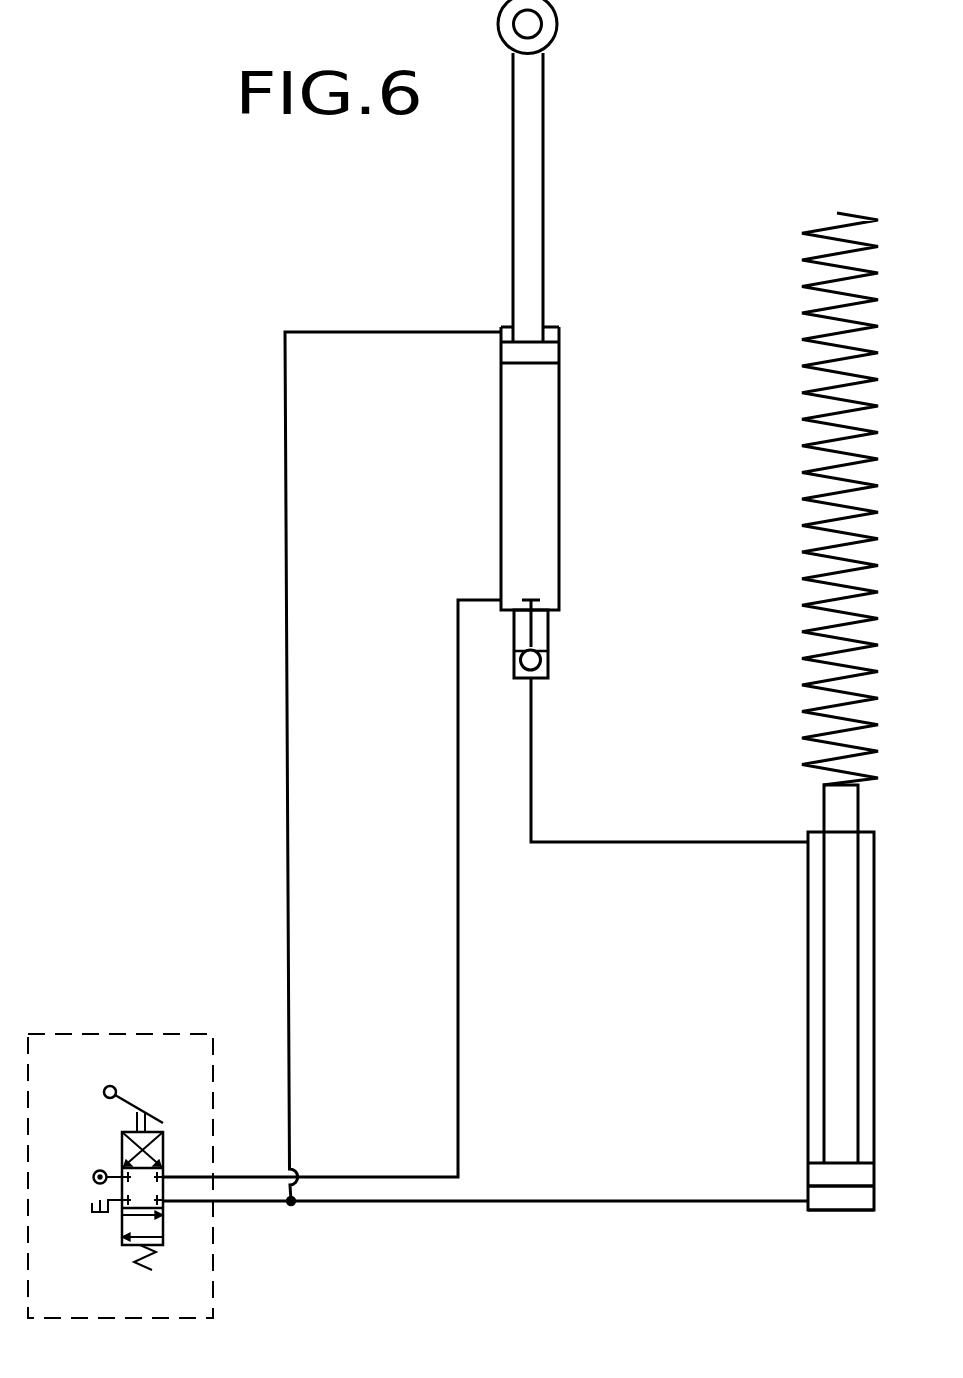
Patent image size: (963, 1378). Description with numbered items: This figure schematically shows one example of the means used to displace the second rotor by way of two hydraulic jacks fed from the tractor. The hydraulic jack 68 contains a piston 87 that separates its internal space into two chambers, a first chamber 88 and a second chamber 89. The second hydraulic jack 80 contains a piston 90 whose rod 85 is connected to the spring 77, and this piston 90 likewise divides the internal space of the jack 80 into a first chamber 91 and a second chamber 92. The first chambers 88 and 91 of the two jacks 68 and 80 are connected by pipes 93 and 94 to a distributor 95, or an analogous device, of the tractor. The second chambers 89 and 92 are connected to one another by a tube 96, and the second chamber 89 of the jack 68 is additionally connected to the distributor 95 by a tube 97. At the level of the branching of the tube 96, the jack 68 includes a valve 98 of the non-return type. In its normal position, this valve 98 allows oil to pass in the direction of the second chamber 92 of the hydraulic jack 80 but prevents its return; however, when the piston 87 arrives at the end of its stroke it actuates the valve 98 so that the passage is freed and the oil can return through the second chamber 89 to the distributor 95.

The hydraulic jack 68 is at (560, 477).
The spring 77 is at (807, 660).
The hydraulic jack 80 is at (807, 1042).
The rod 85 is at (840, 880).
The piston 87 is at (548, 357).
The first chamber 88 is at (558, 325).
The second chamber 89 is at (538, 503).
The piston 90 is at (825, 1175).
The first chamber 91 is at (825, 1202).
The second chamber 92 is at (817, 958).
The pipe 93 is at (282, 605).
The pipe 94 is at (580, 1198).
The distributor 95 is at (147, 1122).
The tube 96 is at (540, 780).
The tube 97 is at (457, 763).
The valve 98 is at (550, 667).